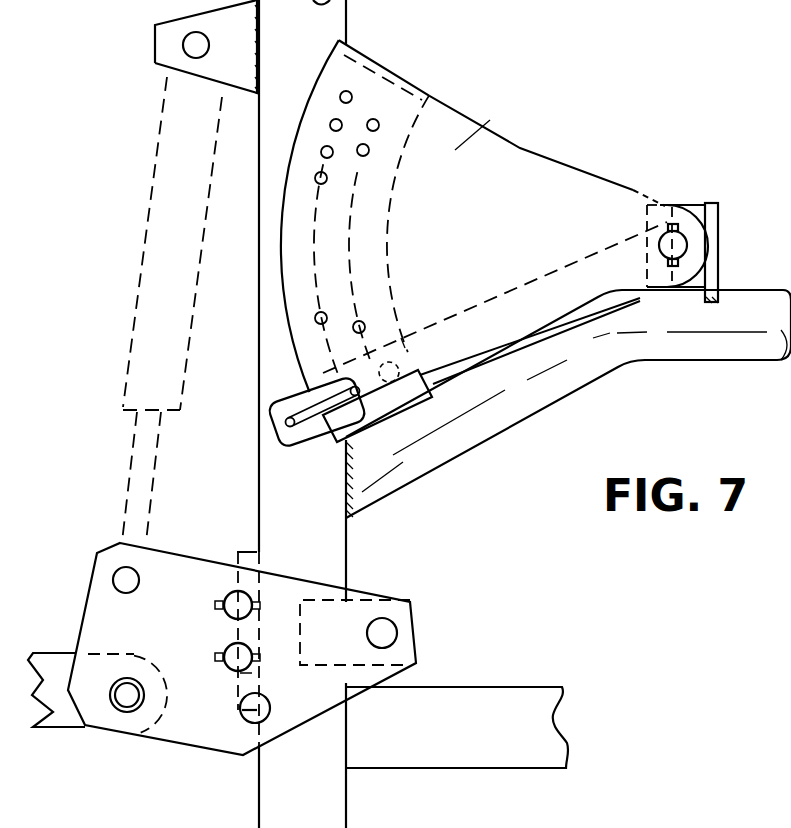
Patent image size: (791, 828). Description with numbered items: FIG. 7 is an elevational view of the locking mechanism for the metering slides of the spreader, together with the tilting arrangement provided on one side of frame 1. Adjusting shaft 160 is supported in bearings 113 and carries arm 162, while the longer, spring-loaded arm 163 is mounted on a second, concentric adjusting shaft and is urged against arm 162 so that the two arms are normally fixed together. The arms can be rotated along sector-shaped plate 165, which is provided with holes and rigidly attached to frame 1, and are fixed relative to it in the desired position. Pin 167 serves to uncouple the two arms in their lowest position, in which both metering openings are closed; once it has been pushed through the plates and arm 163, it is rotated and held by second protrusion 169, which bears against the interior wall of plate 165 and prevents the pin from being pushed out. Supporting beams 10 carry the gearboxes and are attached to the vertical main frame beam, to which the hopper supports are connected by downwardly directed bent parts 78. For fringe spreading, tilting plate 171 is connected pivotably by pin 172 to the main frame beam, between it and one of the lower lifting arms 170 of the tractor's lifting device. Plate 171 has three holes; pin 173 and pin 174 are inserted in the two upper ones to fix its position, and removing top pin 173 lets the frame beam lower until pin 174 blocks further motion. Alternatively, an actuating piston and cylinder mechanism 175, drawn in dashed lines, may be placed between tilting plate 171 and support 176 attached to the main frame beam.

The frame 1 is at (357, 555).
The supporting beams 10 is at (567, 743).
The bent parts 78 is at (563, 390).
The bearings 113 is at (690, 205).
The adjusting shaft 160 is at (677, 245).
The arm 162 is at (478, 328).
The arm 163 is at (262, 410).
The sector-shaped plate 165 is at (390, 115).
The pin 167 is at (310, 425).
The second protrusion 169 is at (358, 386).
The lower lifting arm 170 is at (67, 722).
The tilting plate 171 is at (187, 728).
The pin 172 is at (385, 633).
The pin 173 is at (227, 610).
The pin 174 is at (223, 645).
The piston and cylinder mechanism 175 is at (187, 288).
The support 176 is at (190, 48).